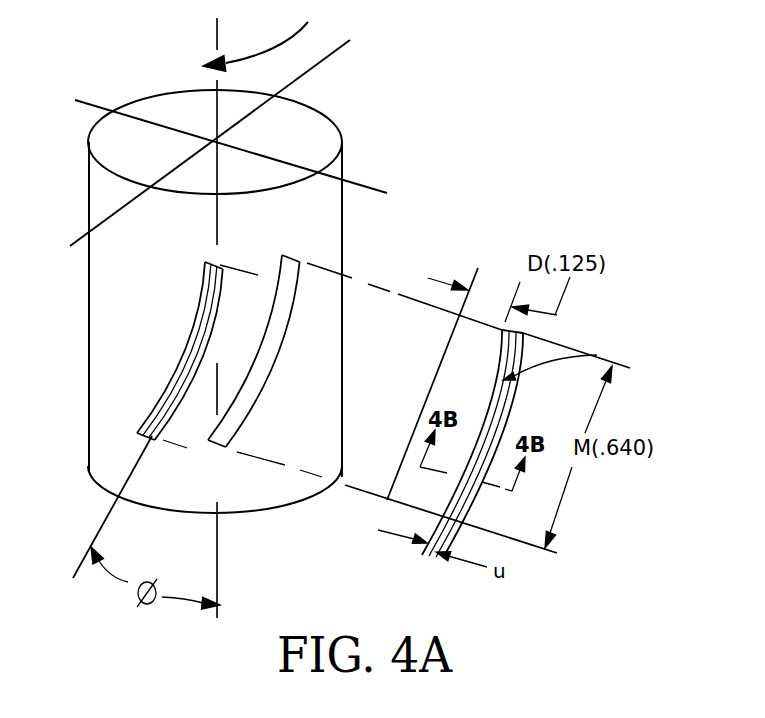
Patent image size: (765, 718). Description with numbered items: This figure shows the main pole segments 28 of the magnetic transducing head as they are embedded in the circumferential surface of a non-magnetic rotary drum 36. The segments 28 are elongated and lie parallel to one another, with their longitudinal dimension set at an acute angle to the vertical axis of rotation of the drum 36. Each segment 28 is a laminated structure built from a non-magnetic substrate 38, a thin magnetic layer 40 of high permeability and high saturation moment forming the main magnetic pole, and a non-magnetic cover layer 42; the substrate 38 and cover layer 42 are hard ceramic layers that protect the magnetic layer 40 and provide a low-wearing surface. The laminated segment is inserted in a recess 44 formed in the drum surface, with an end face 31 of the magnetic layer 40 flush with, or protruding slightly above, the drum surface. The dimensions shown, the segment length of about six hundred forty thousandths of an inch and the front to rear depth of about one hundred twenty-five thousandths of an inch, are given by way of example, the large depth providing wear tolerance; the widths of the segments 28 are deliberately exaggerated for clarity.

The main pole segment 28 is at (344, 394).
The end face 31 is at (190, 340).
The rotary drum 36 is at (326, 111).
The non-magnetic substrate 38 is at (595, 356).
The magnetic layer 40 is at (515, 332).
The non-magnetic cover layer 42 is at (410, 503).
The recess 44 is at (250, 400).